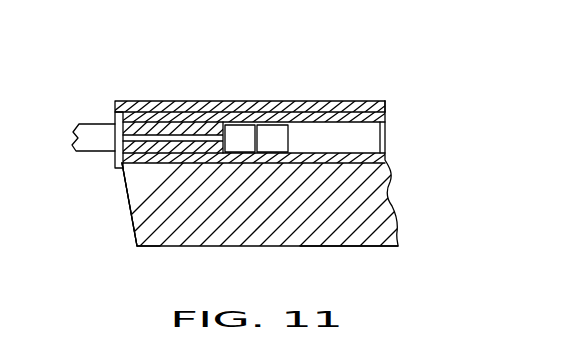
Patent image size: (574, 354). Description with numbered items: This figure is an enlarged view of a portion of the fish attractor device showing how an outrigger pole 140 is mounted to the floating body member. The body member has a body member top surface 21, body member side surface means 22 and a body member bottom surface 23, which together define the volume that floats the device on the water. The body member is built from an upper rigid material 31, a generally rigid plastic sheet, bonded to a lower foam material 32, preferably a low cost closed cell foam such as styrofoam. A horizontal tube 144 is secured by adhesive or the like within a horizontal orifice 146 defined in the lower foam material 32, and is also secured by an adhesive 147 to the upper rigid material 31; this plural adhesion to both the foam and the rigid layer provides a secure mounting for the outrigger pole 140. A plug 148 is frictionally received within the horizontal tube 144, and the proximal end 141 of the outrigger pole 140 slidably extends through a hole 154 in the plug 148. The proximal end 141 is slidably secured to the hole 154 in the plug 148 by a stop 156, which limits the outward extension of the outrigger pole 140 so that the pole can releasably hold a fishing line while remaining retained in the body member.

The body member top surface 21 is at (338, 101).
The body member side surface means 22 is at (131, 228).
The body member bottom surface 23 is at (347, 247).
The upper rigid material 31 is at (387, 103).
The lower foam material 32 is at (367, 190).
The outrigger pole 140 is at (95, 135).
The proximal end 141 is at (120, 170).
The horizontal tube 144 is at (387, 111).
The horizontal orifice 146 is at (205, 156).
The adhesive 147 is at (235, 112).
The plug 148 is at (181, 116).
The hole 154 is at (116, 165).
The stop 156 is at (272, 137).